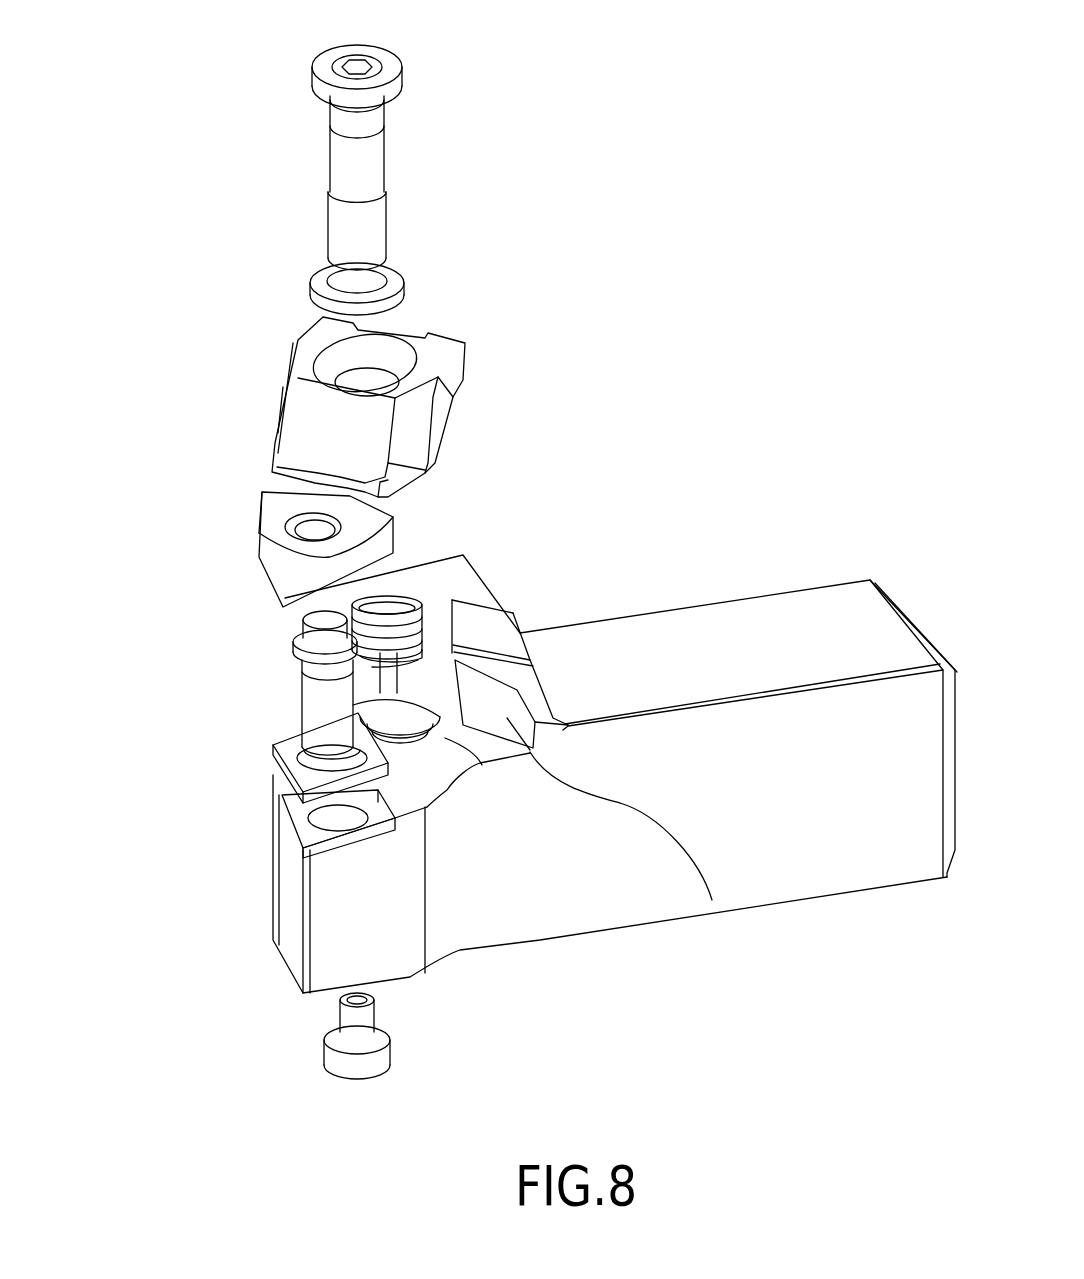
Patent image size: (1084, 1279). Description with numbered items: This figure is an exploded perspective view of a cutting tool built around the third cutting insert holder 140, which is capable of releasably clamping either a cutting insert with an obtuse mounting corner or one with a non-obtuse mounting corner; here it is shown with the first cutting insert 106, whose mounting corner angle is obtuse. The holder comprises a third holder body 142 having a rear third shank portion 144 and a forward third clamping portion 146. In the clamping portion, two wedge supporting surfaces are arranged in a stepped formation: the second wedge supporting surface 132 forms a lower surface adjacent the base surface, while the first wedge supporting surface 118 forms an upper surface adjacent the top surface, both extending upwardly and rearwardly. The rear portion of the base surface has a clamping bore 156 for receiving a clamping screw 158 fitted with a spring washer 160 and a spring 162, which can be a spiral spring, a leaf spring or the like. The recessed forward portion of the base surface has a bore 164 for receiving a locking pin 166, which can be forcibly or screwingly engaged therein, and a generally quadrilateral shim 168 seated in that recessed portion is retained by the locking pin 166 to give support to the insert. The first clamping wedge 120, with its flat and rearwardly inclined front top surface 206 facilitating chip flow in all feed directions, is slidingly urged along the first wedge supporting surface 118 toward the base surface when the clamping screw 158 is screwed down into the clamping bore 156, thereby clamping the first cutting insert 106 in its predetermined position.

The first cutting insert 106 is at (272, 526).
The first wedge supporting surface 118 is at (488, 627).
The first clamping wedge 120 is at (341, 388).
The second wedge supporting surface 132 is at (712, 900).
The third cutting insert holder 140 is at (648, 185).
The third holder body 142 is at (615, 749).
The third shank portion 144 is at (807, 618).
The third clamping portion 146 is at (165, 632).
The clamping bore 156 is at (482, 765).
The clamping screw 158 is at (392, 63).
The spring washer 160 is at (392, 267).
The spring 162 is at (396, 595).
The bore 164 is at (330, 820).
The locking pin 166 is at (310, 695).
The shim 168 is at (300, 778).
The front top surface 206 is at (310, 430).